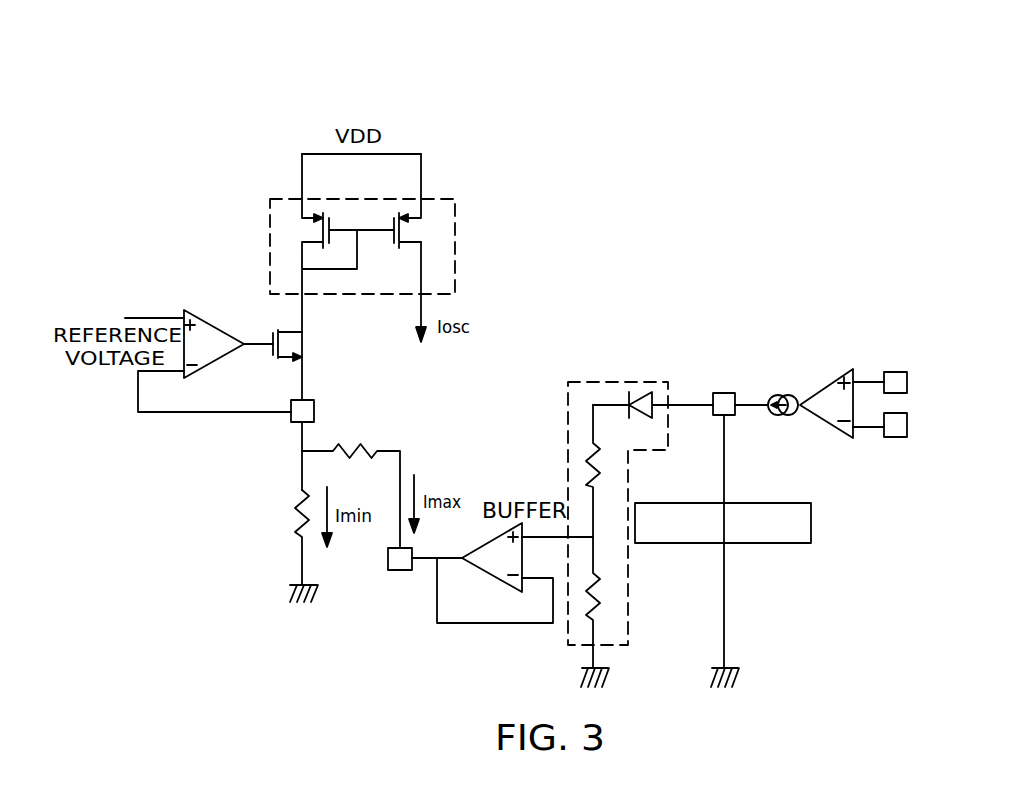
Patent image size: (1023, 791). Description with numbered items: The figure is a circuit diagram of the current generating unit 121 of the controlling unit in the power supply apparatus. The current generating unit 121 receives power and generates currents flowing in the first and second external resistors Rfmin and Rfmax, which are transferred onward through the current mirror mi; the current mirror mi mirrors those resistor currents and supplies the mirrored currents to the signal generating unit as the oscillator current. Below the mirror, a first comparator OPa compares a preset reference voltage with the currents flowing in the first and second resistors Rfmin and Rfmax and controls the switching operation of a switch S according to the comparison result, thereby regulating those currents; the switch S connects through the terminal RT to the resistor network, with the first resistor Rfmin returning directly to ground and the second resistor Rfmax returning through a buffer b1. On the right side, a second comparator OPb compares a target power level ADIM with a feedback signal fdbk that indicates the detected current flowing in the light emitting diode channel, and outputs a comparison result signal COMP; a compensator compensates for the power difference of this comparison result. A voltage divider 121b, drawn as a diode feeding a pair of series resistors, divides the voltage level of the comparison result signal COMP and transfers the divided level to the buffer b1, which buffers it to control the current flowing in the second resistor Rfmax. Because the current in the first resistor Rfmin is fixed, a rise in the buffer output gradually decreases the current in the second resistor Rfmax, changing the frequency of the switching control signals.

The current generating unit 121 is at (805, 526).
The voltage divider 121b is at (593, 382).
The current mirror mi is at (457, 236).
The first comparator OPa is at (212, 322).
The second comparator OPb is at (832, 388).
The buffer b1 is at (497, 547).
The switch S is at (300, 365).
The timing resistor terminal RT is at (319, 444).
The second external resistor Rfmax is at (351, 496).
The first external resistor Rfmin is at (278, 546).
The comparison result signal COMP is at (735, 526).
The target power level ADIM is at (920, 382).
The feedback signal fdbk is at (917, 425).